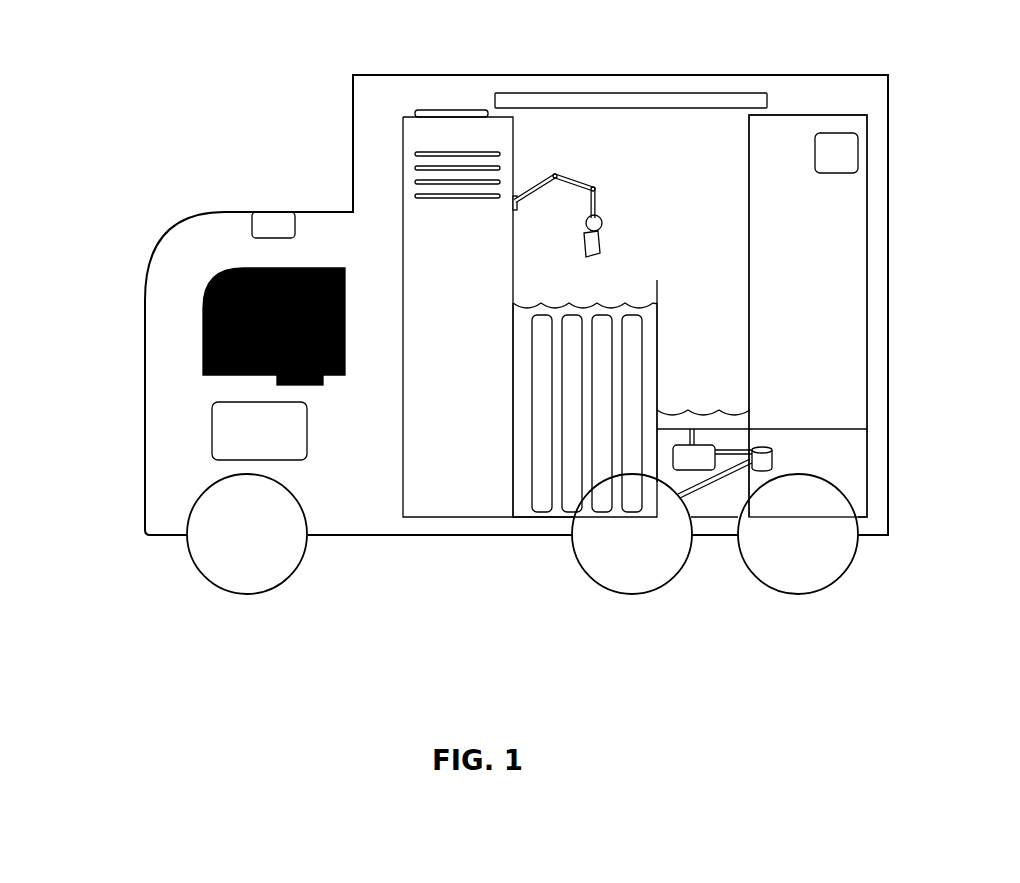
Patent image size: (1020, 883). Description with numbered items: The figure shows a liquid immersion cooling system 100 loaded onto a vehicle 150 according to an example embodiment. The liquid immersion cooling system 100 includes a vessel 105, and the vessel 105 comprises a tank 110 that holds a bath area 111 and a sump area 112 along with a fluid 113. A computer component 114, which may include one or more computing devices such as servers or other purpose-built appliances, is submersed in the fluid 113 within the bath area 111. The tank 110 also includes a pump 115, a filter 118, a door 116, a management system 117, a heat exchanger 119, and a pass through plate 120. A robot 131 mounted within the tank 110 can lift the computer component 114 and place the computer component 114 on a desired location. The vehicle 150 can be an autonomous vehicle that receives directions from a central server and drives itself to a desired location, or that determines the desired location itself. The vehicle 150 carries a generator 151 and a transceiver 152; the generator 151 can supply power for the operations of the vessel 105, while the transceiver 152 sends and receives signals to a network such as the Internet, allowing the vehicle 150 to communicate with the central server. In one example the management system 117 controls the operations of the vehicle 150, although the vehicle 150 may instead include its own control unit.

The liquid immersion cooling system 100 is at (403, 115).
The vessel 105 is at (392, 445).
The tank 110 is at (510, 273).
The bath area 111 is at (518, 468).
The sump area 112 is at (738, 398).
The fluid 113 is at (634, 292).
The computer component 114 is at (568, 503).
The pump 115 is at (697, 473).
The door 116 is at (594, 92).
The management system 117 is at (833, 152).
The filter 118 is at (762, 446).
The heat exchanger 119 is at (502, 154).
The pass through plate 120 is at (443, 108).
The robot 131 is at (509, 210).
The vehicle 150 is at (152, 540).
The generator 151 is at (205, 432).
The transceiver 152 is at (253, 210).